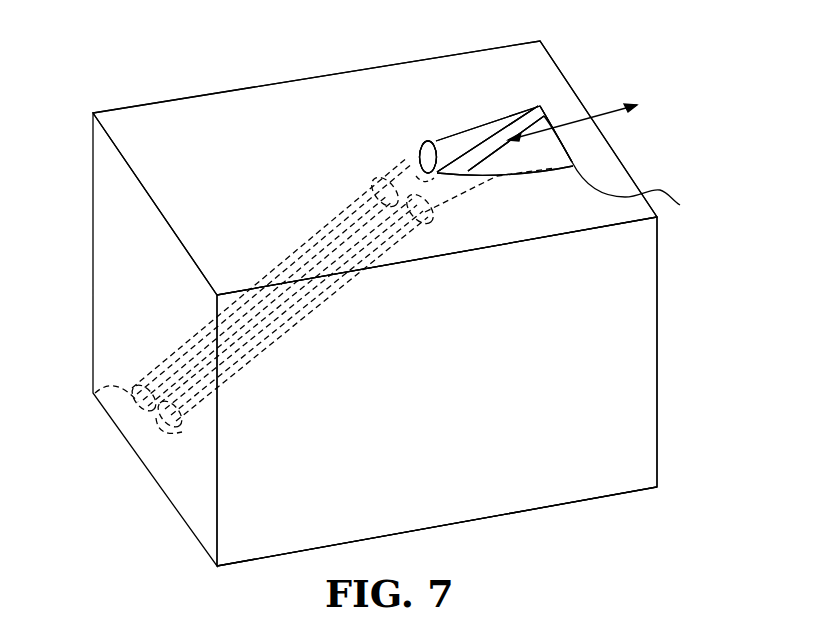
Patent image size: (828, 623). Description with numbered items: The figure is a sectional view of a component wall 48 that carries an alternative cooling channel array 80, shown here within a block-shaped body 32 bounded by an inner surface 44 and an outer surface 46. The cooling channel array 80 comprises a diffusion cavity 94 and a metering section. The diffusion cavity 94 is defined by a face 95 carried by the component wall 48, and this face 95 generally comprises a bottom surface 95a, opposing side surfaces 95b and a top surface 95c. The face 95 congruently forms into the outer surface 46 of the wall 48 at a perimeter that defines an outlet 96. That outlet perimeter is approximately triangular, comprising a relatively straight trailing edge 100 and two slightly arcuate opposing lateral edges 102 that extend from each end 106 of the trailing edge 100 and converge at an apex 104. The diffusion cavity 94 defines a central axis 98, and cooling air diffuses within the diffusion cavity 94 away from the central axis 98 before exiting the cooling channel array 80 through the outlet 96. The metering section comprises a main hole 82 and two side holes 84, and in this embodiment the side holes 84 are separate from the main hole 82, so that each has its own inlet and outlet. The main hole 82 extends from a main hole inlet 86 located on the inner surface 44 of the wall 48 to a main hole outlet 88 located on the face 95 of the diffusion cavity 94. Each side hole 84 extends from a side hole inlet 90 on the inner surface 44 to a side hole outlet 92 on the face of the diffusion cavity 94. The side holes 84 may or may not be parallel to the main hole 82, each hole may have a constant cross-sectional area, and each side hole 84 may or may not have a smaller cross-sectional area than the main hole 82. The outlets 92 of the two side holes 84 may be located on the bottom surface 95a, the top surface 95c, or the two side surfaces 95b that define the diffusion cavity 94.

The block body 32 is at (632, 297).
The inner surface 44 is at (578, 507).
The outer surface 46 is at (184, 118).
The component wall 48 is at (607, 419).
The cooling channel array 80 is at (549, 112).
The main hole 82 is at (258, 328).
The side holes 84 is at (296, 266).
The main hole inlet 86 is at (140, 408).
The main hole outlet 88 is at (402, 204).
The side hole inlet 90 is at (110, 393).
The side hole outlet 92 is at (381, 182).
The diffusion cavity 94 is at (527, 165).
The face 95 is at (553, 122).
The bottom surface 95a is at (557, 142).
The side surfaces 95b is at (457, 137).
The top surface 95c is at (430, 146).
The outlet 96 is at (491, 118).
The central axis 98 is at (592, 117).
The trailing edge 100 is at (574, 153).
The lateral edges 102 is at (519, 113).
The apex 104 is at (420, 157).
The end 106 is at (539, 104).